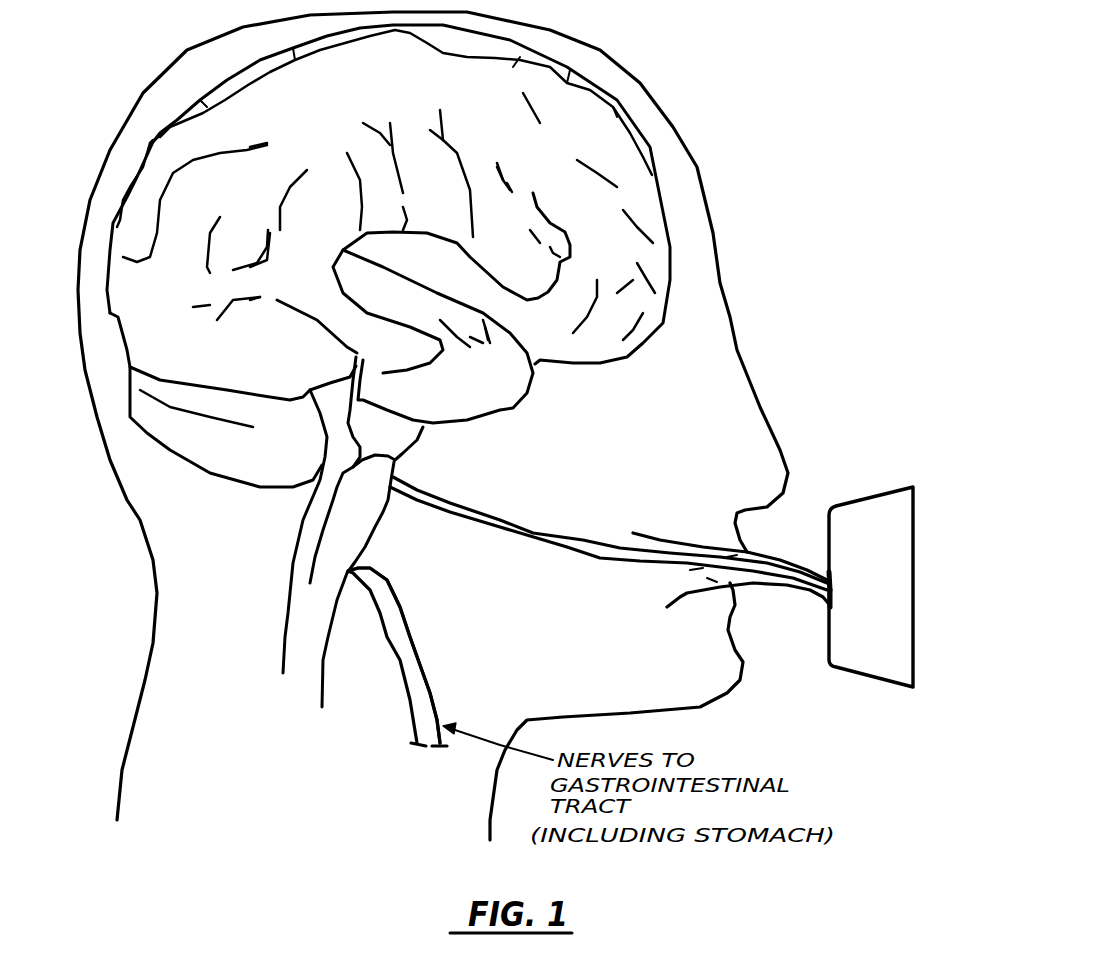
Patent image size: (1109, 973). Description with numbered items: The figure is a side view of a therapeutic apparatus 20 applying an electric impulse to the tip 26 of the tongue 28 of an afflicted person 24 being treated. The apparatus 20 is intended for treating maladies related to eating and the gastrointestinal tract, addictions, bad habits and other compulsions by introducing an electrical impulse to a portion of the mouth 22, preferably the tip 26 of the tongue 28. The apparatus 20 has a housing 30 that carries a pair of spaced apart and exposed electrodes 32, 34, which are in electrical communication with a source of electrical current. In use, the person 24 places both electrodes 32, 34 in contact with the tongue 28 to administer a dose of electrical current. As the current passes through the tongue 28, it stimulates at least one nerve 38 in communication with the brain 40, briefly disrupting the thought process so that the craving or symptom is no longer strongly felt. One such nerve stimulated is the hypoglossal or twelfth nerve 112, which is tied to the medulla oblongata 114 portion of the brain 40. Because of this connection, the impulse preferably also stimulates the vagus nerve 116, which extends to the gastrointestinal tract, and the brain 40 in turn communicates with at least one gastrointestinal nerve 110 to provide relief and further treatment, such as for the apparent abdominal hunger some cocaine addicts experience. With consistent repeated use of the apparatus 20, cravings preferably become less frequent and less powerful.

The therapeutic apparatus 20 is at (881, 558).
The mouth 22 is at (766, 630).
The afflicted person 24 is at (755, 280).
The tip of the tongue 26 is at (827, 600).
The tongue 28 is at (772, 549).
The housing 30 is at (913, 497).
The electrode 32 is at (826, 574).
The electrode 34 is at (827, 606).
The nerve 38 is at (564, 556).
The brain 40 is at (672, 167).
The gastrointestinal nerve 110 is at (403, 696).
The hypoglossal nerve 112 is at (608, 531).
The medulla oblongata 114 is at (363, 526).
The vagus nerve 116 is at (423, 661).